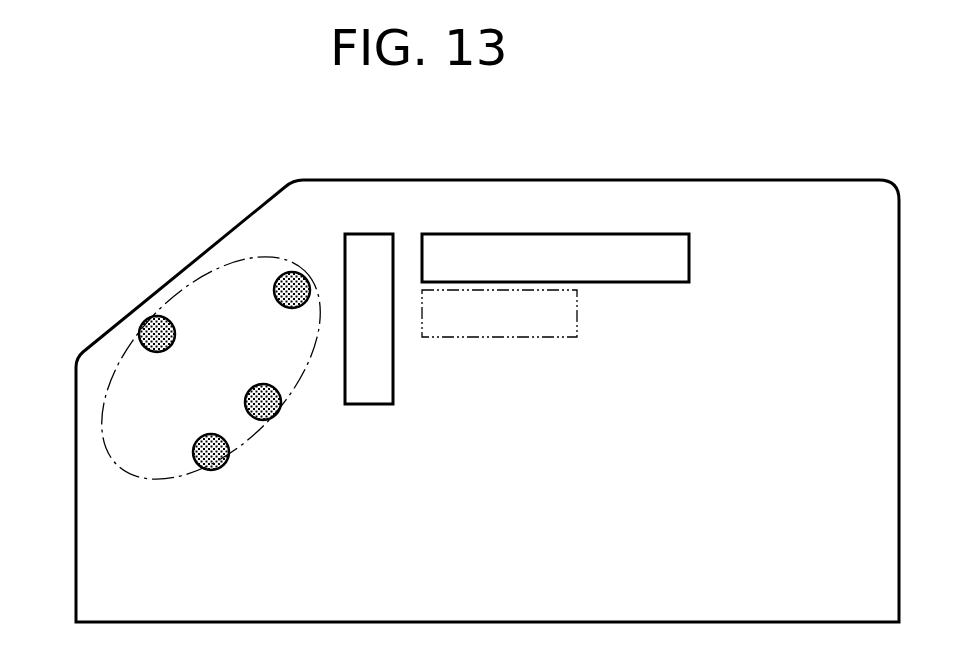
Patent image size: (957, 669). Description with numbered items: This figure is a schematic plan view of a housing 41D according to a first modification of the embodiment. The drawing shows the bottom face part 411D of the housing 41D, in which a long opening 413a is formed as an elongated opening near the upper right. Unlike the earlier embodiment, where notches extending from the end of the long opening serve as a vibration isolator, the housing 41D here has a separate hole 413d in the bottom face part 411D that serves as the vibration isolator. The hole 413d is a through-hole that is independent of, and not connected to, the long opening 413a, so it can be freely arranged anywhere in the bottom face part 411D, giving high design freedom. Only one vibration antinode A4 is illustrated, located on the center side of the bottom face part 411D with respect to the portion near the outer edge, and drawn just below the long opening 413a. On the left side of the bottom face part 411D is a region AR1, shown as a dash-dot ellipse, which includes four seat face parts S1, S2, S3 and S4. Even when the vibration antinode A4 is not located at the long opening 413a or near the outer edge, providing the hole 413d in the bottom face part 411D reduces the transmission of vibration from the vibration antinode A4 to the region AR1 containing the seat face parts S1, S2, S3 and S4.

The housing 41D is at (815, 152).
The bottom face part 411D is at (595, 202).
The hole 413d is at (366, 235).
The long opening 413a is at (662, 235).
The vibration antinode A4 is at (577, 325).
The region AR1 is at (113, 365).
The seat face part S1 is at (150, 330).
The seat face part S2 is at (200, 457).
The seat face part S3 is at (263, 384).
The seat face part S4 is at (280, 276).